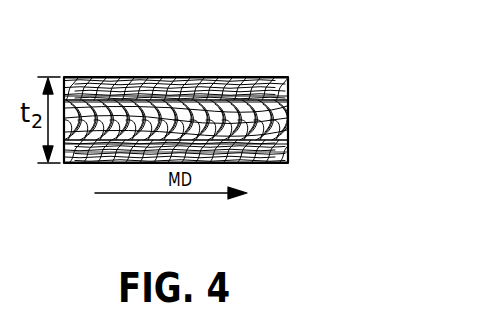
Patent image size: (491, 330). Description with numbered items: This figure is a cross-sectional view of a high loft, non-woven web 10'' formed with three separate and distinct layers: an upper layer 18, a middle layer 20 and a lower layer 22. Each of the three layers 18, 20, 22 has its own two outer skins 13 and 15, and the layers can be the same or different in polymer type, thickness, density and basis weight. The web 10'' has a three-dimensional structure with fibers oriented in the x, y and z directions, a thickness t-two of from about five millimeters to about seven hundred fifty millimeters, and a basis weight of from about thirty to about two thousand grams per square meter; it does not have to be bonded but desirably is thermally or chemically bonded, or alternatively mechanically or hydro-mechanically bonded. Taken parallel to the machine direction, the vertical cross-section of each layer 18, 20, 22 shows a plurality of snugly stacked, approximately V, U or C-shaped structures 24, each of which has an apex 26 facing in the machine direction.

The non-woven web 10'' is at (213, 81).
The outer skin 13 is at (288, 77).
The outer skin 15 is at (290, 96).
The upper layer 18 is at (290, 80).
The middle layer 20 is at (290, 118).
The lower layer 22 is at (290, 158).
The V, U or C-shaped structures 24 is at (144, 86).
The apex 26 is at (188, 77).